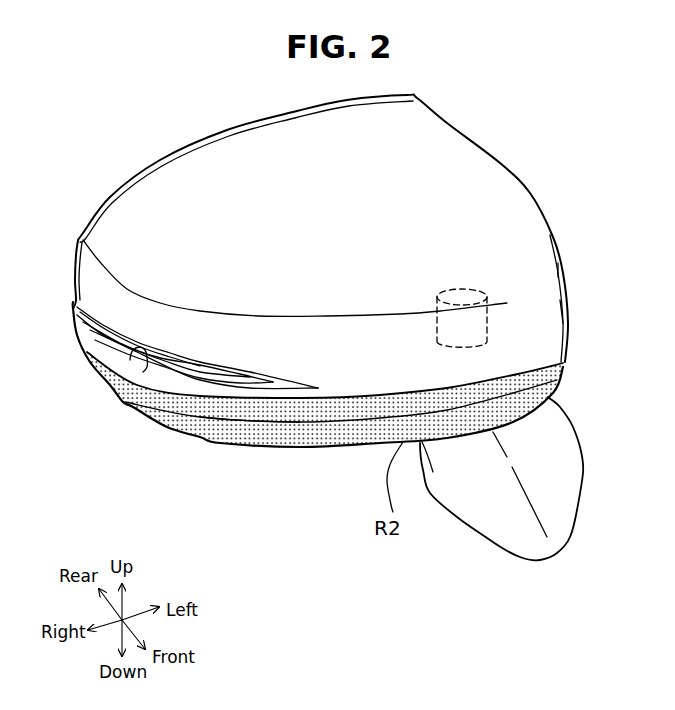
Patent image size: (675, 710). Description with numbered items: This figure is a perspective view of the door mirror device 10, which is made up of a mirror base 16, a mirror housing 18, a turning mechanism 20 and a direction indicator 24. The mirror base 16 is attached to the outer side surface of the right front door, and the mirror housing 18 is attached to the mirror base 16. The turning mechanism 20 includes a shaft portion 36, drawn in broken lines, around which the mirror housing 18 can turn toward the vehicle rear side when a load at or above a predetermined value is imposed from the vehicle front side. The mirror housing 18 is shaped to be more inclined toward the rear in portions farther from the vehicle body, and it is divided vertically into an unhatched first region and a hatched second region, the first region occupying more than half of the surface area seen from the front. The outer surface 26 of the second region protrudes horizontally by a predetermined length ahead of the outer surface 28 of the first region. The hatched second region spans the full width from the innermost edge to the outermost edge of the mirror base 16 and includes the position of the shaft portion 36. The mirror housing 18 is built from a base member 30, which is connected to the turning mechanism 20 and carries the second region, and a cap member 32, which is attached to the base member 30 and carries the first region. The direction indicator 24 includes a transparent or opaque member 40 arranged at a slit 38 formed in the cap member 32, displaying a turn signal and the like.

The door mirror device 10 is at (502, 92).
The mirror base 16 is at (557, 463).
The mirror housing 18 is at (545, 195).
The turning mechanism 20 is at (500, 330).
The direction indicator 24 is at (110, 343).
The outer surface of the second region 26 is at (352, 425).
The outer surface of the first region 28 is at (343, 317).
The base member 30 is at (243, 427).
The cap member 32 is at (200, 193).
The shaft portion 36 is at (477, 283).
The slit 38 is at (147, 367).
The transparent or opaque member 40 is at (93, 323).